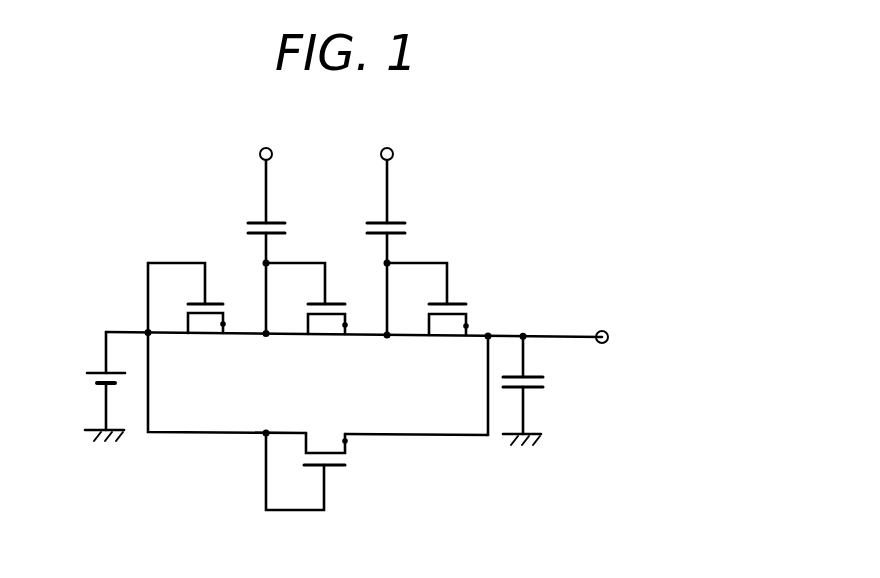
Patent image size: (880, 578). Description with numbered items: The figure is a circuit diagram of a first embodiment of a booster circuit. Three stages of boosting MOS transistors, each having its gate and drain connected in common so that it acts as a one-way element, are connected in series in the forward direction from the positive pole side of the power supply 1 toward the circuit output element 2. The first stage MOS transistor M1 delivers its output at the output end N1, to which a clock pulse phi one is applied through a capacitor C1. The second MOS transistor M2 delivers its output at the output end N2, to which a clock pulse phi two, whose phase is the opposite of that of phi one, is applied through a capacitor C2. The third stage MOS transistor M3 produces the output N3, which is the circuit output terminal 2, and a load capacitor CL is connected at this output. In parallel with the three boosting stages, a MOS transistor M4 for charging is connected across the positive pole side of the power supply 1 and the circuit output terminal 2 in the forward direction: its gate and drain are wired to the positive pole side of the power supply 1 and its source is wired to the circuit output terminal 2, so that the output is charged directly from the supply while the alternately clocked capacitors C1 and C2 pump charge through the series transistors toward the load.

The power supply 1 is at (89, 378).
The circuit output element 2 is at (598, 331).
The first stage MOS transistor M1 is at (187, 313).
The second MOS transistor M2 is at (307, 313).
The third stage MOS transistor M3 is at (428, 313).
The MOS transistor for charging M4 is at (307, 459).
The capacitor C1 is at (257, 225).
The capacitor C2 is at (377, 225).
The load capacitor CL is at (540, 390).
The output end of the first stage MOS transistor N1 is at (254, 337).
The output end of the second MOS transistor N2 is at (364, 338).
The output of the third stage MOS transistor N3 is at (490, 334).